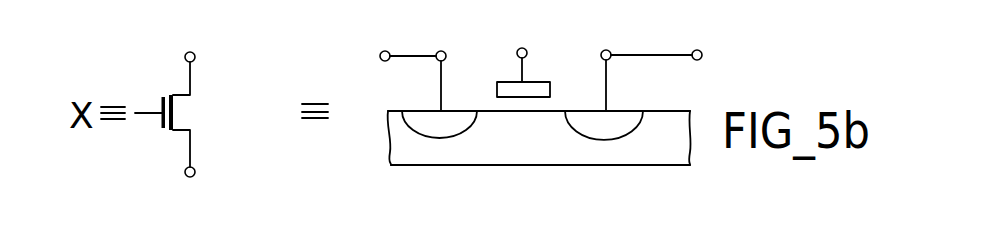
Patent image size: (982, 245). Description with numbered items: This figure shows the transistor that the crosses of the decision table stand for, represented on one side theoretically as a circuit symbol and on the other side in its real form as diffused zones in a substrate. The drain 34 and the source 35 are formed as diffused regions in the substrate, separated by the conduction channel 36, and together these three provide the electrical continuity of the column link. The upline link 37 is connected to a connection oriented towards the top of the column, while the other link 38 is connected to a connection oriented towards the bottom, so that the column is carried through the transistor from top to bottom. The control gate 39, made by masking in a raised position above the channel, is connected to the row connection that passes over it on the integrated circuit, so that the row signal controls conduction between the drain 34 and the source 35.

The drain 34 is at (423, 125).
The source 35 is at (617, 130).
The conduction channel 36 is at (523, 132).
The upline link 37 is at (192, 70).
The other link 38 is at (192, 153).
The control gate 39 is at (161, 98).